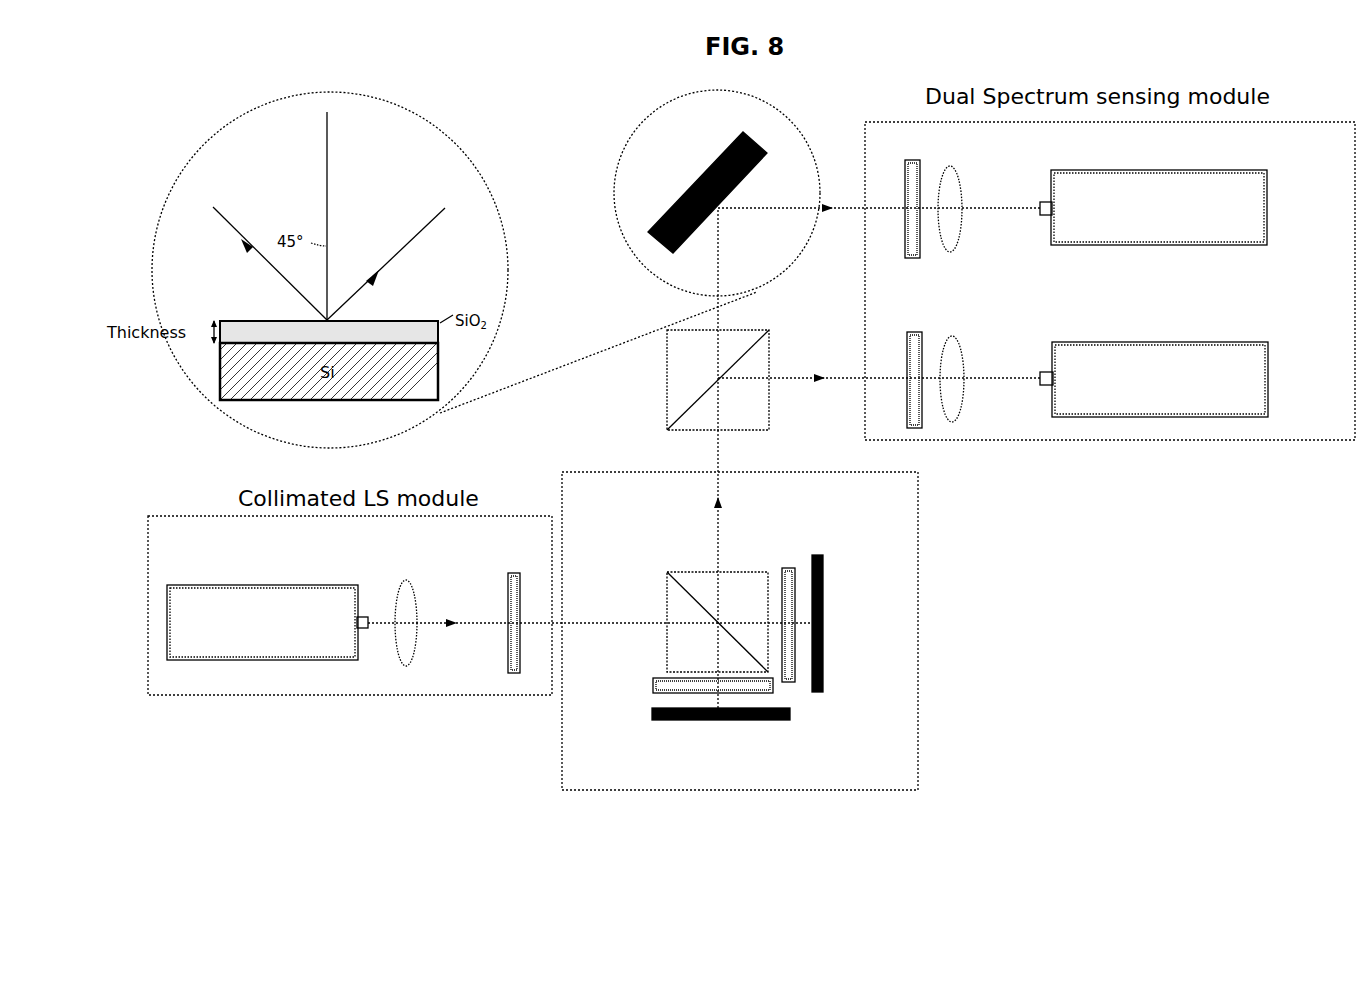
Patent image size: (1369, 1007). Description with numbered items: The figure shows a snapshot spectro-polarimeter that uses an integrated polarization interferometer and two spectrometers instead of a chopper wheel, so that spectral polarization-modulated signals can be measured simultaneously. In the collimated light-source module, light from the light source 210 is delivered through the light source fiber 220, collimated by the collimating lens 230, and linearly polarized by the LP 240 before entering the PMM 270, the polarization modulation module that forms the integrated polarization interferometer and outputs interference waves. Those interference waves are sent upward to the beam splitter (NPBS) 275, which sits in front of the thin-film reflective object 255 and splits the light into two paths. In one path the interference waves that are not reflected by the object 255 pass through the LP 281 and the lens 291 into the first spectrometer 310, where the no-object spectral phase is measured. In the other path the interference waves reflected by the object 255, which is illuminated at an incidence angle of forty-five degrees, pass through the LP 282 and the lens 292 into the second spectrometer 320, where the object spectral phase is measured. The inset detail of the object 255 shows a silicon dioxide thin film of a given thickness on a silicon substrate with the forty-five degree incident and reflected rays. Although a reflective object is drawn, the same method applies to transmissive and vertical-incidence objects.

The light source 210 is at (262, 661).
The light source fiber 220 is at (380, 630).
The collimating lens 230 is at (407, 665).
The LP 240 is at (514, 673).
The reflective object 255 is at (745, 134).
The PMM 270 is at (918, 548).
The beam splitter (NPBS) 275 is at (769, 330).
The LP 281 is at (920, 428).
The LP 282 is at (918, 256).
The lens 291 is at (962, 400).
The lens 292 is at (960, 230).
The spectrometer 1 310 is at (1245, 342).
The spectrometer 2 320 is at (1245, 170).